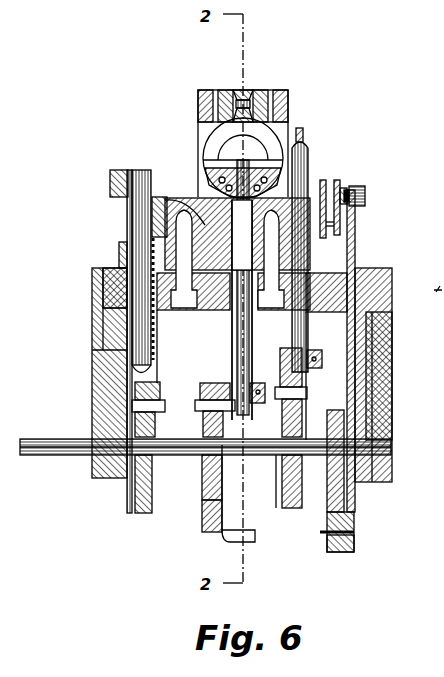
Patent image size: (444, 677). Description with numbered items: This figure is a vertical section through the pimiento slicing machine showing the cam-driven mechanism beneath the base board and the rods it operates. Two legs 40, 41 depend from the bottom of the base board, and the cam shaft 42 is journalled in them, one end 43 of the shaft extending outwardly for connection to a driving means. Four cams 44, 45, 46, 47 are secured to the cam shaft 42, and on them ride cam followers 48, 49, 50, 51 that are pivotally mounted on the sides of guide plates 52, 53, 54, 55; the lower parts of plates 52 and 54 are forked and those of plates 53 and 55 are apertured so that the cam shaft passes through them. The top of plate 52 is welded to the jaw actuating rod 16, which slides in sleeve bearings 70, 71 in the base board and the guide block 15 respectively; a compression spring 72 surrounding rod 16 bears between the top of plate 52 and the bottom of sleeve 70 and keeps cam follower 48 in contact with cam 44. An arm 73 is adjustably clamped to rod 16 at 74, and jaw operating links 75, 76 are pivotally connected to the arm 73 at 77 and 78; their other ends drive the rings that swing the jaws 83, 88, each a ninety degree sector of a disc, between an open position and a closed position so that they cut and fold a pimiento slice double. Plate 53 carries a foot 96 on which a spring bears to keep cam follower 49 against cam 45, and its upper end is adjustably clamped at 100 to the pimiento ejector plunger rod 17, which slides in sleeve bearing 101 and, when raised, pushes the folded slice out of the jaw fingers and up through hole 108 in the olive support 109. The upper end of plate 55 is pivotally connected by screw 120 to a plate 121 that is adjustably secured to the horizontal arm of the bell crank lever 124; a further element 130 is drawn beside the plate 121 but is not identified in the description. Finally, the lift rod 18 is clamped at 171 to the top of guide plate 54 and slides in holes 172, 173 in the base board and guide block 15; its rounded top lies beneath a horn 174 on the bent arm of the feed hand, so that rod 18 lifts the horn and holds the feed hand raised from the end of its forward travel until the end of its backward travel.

The guide block 15 is at (158, 175).
The jaw actuating rod 16 is at (150, 229).
The pimiento ejection plunger rod 17 is at (225, 165).
The lift rod 18 is at (308, 158).
The leg 40 is at (95, 382).
The leg 41 is at (392, 402).
The cam shaft 42 is at (372, 446).
The end of cam shaft 43 is at (75, 440).
The cam 44 is at (138, 505).
The cam 45 is at (205, 532).
The cam 46 is at (290, 508).
The cam 47 is at (345, 470).
The cam follower 48 is at (155, 395).
The cam follower 49 is at (200, 394).
The cam follower 50 is at (306, 392).
The cam follower 51 is at (345, 550).
The guide plate 52 is at (108, 345).
The guide plate 53 is at (217, 443).
The guide plate 54 is at (302, 378).
The guide plate 55 is at (355, 515).
The sleeve bearing 70 is at (73, 304).
The sleeve bearing 71 is at (130, 172).
The compression spring 72 is at (118, 300).
The arm 73 is at (176, 242).
The clamp 74 is at (120, 249).
The jaw operating link 75 is at (212, 196).
The jaw operating link 76 is at (320, 182).
The pivot connection 77 is at (164, 299).
The pivot connection 78 is at (189, 346).
The jaw 83 is at (215, 172).
The jaw 88 is at (270, 155).
The foot 96 is at (243, 542).
The clamp 100 is at (230, 402).
The sleeve bearing 101 is at (221, 279).
The hole 108 is at (232, 90).
The olive support 109 is at (283, 90).
The screw 120 is at (367, 196).
The plate 121 is at (358, 190).
The bell crank lever 124 is at (348, 186).
The plate 130 is at (338, 182).
The clamp 171 is at (314, 366).
The hole 172 is at (320, 270).
The hole 173 is at (312, 258).
The horn 174 is at (303, 138).